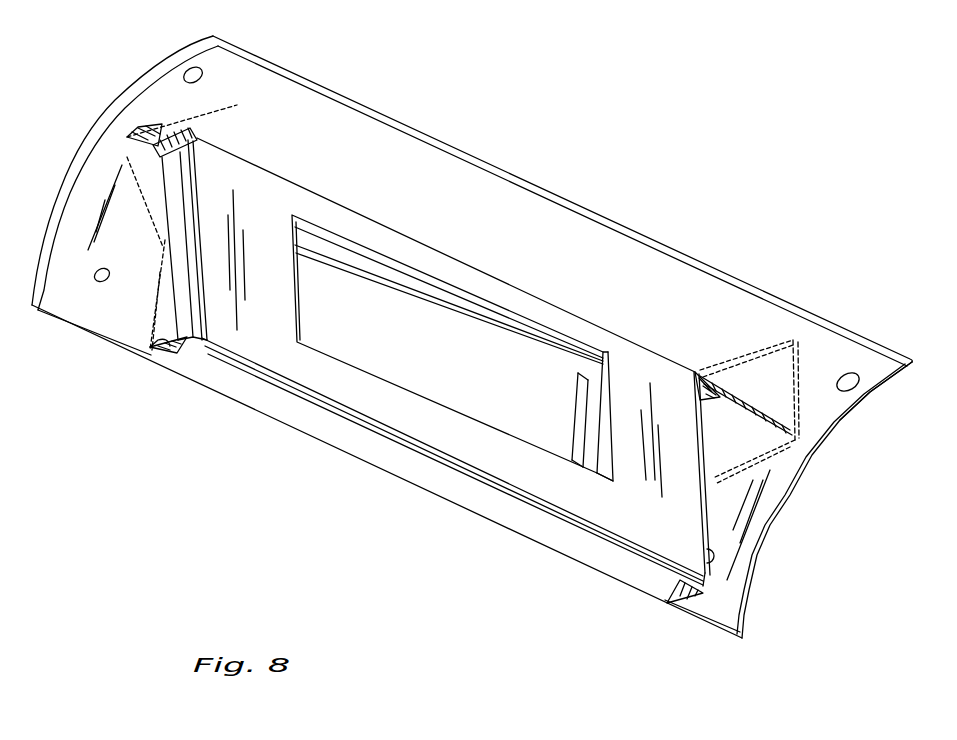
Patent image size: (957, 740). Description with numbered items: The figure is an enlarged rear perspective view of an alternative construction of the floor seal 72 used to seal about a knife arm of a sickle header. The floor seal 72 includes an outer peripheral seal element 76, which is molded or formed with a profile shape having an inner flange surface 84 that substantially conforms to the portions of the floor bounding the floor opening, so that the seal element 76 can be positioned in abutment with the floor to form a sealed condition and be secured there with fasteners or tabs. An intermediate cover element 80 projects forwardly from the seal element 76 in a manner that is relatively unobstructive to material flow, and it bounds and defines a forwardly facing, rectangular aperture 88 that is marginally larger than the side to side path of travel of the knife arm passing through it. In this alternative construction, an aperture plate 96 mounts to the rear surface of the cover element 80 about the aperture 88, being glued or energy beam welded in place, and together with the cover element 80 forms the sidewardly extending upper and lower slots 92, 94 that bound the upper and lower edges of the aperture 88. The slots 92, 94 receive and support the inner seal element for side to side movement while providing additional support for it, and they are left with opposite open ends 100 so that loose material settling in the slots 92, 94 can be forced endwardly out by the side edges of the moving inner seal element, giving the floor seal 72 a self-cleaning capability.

The floor seal 72 is at (634, 106).
The inner flange surface 84 is at (313, 110).
The upper slot 92 is at (373, 267).
The aperture 88 is at (585, 365).
The intermediate cover element 80 is at (587, 360).
The outer peripheral seal element 76 is at (840, 407).
The aperture plate 96 is at (693, 527).
The lower slot 94 is at (177, 338).
The open ends 100 is at (175, 302).